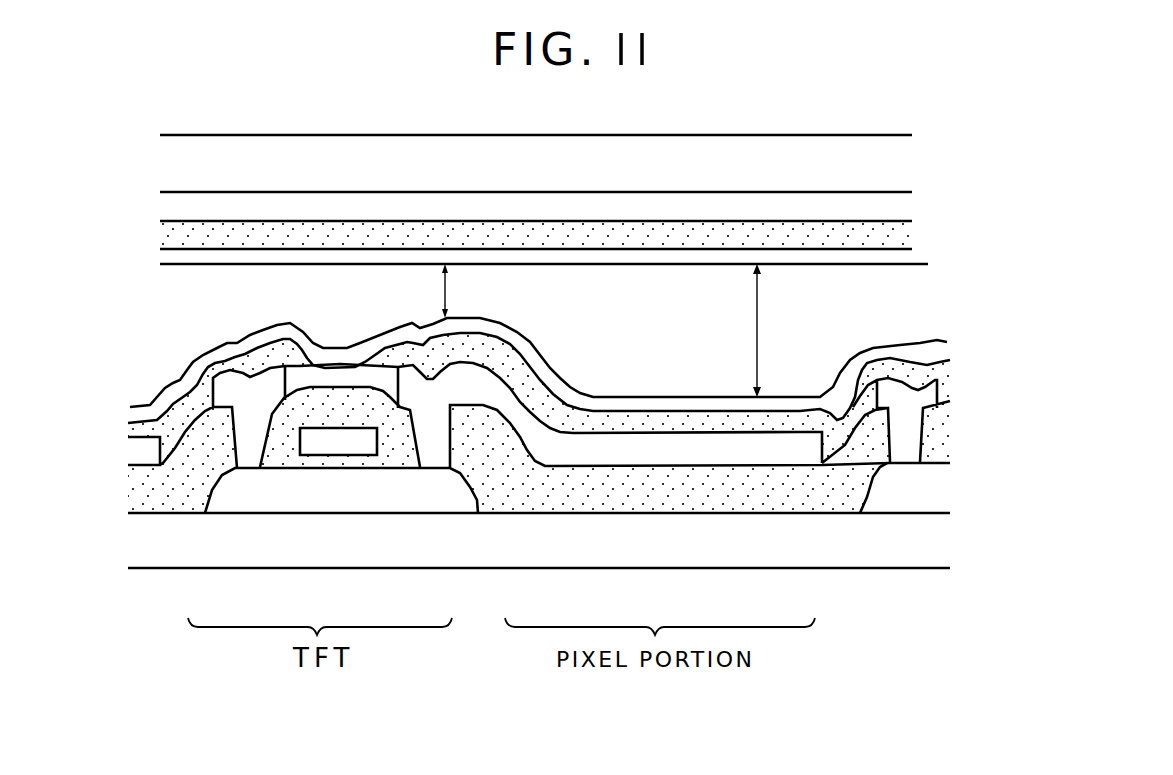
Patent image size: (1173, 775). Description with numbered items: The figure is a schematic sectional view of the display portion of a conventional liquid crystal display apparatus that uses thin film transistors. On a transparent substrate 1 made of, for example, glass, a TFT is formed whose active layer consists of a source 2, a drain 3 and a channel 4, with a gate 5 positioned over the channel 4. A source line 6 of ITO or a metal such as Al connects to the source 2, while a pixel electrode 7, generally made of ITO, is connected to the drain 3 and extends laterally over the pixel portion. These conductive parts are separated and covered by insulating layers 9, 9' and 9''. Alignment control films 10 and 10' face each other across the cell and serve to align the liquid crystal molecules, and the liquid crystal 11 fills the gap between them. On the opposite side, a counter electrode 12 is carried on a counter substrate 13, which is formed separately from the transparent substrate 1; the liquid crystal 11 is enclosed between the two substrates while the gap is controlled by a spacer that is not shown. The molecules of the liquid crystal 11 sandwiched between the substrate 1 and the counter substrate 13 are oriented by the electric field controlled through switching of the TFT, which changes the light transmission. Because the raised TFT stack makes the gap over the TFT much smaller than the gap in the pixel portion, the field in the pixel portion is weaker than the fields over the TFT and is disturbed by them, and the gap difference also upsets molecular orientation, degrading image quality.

The transparent substrate 1 is at (930, 540).
The source 2 is at (225, 505).
The drain 3 is at (426, 505).
The channel 4 is at (315, 505).
The gate 5 is at (352, 455).
The source line 6 is at (223, 394).
The pixel electrode 7 is at (575, 460).
The insulating layer 9 is at (509, 460).
The insulating layer 9' is at (561, 399).
The insulating layer 9'' is at (572, 222).
The alignment control film 10 is at (564, 370).
The alignment control film 10' is at (576, 251).
The liquid crystal 11 is at (932, 314).
The counter electrode 12 is at (896, 203).
The counter substrate 13 is at (896, 153).